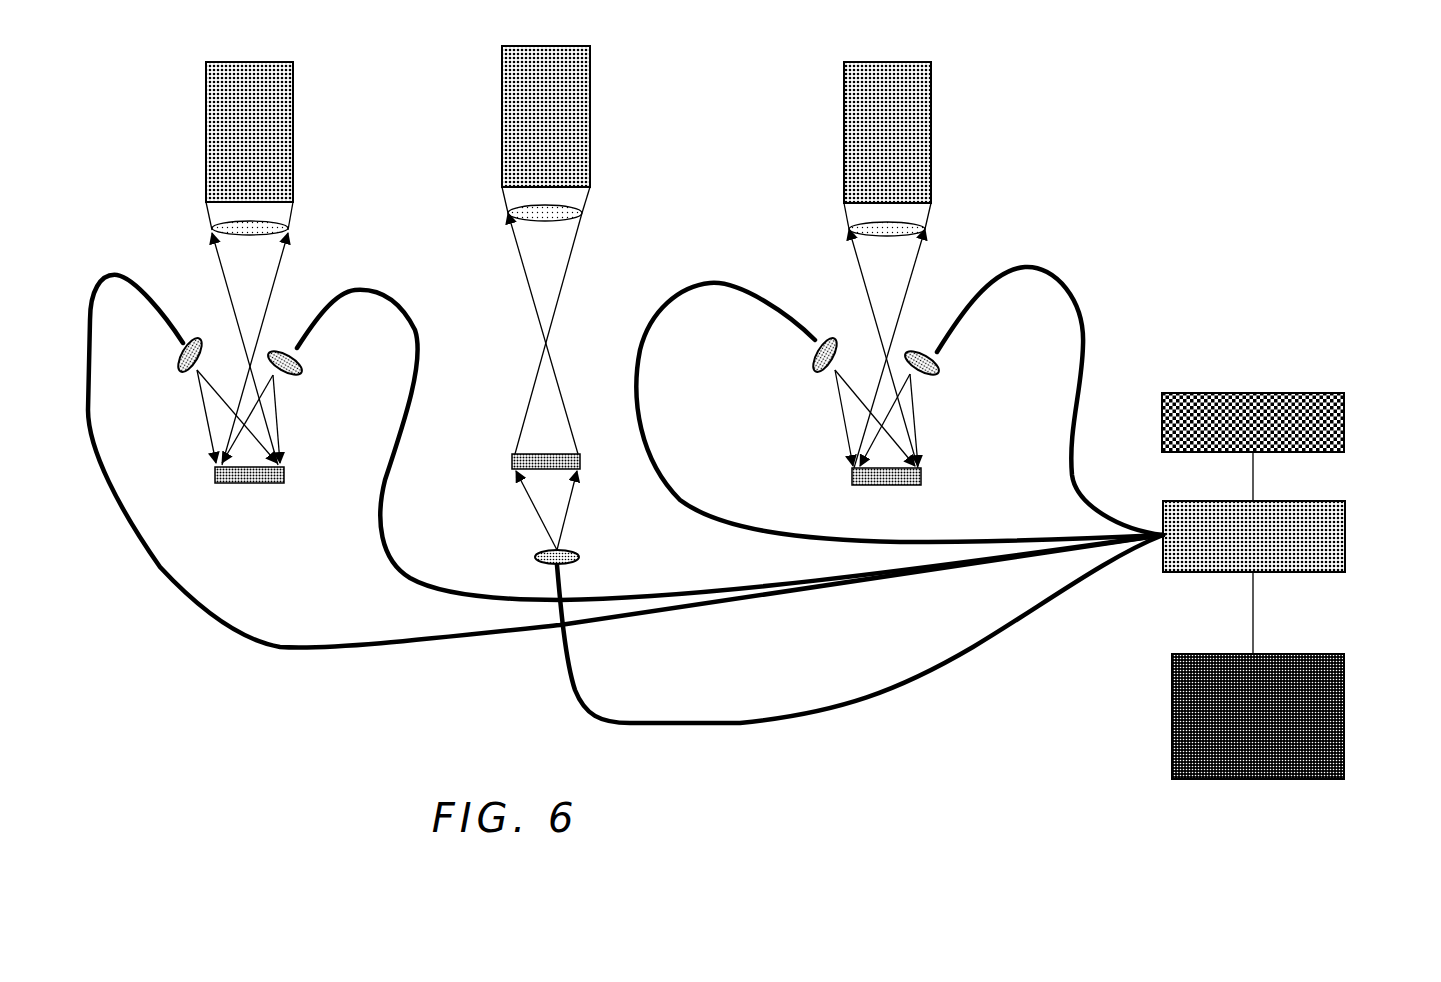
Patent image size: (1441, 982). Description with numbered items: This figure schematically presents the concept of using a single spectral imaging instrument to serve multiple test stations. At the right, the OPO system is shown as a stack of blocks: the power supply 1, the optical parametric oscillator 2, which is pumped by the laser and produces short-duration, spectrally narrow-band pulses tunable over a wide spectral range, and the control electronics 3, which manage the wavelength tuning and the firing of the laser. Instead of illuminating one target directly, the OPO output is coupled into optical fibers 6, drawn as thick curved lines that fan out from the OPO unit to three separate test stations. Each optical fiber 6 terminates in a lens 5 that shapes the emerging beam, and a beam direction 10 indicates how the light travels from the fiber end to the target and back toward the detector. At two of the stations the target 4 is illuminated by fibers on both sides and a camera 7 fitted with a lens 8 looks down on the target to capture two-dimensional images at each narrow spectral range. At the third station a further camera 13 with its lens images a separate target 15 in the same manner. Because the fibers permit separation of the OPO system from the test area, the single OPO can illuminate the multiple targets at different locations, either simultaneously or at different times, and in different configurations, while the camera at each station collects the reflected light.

The power supply 1 is at (1343, 713).
The optical parametric oscillator 2 is at (1346, 533).
The control electronics 3 is at (1345, 423).
The target 4 is at (522, 453).
The lens 5 is at (536, 560).
The optical fiber 6 is at (1088, 351).
The camera 7 is at (588, 122).
The lens 8 is at (510, 213).
The beam direction 10 is at (532, 512).
The camera 13 is at (293, 135).
The target 15 is at (267, 483).